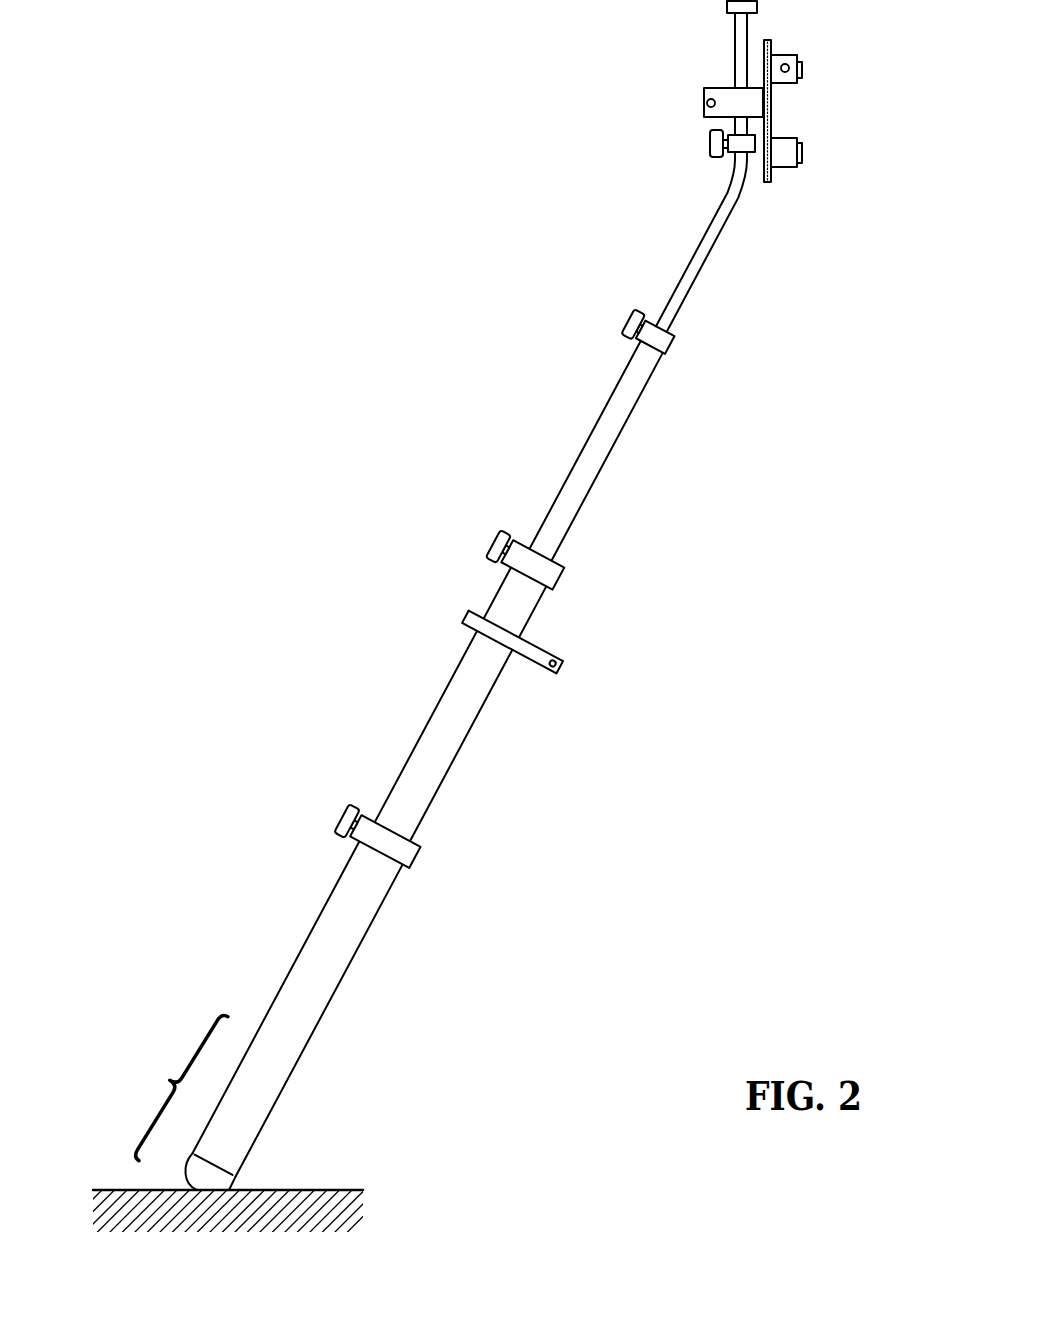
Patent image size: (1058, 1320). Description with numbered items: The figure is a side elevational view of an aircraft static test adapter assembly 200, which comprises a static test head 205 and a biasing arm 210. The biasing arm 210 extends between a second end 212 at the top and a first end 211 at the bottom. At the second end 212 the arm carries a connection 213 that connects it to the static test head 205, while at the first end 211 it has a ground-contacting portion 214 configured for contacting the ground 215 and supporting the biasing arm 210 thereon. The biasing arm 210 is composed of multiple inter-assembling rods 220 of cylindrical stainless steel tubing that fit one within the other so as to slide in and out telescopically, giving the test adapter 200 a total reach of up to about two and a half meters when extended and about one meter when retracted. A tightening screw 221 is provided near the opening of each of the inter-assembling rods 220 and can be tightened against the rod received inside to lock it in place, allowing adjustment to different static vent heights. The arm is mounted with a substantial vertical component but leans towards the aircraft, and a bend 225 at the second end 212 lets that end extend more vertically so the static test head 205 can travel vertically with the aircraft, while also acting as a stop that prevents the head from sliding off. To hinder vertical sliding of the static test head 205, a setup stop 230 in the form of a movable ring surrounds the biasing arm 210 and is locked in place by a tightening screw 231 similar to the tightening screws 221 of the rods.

The aircraft static test adapter assembly 200 is at (280, 123).
The static test head 205 is at (782, 55).
The biasing arm 210 is at (453, 700).
The first end 211 is at (176, 1084).
The second end 212 is at (715, 109).
The connection 213 is at (736, 88).
The ground-contacting portion 214 is at (193, 1177).
The ground 215 is at (323, 1189).
The inter-assembling rods 220 is at (684, 283).
The tightening screw 221 is at (628, 325).
The bend 225 is at (741, 184).
The setup stop 230 is at (735, 151).
The tightening screw 231 is at (691, 138).